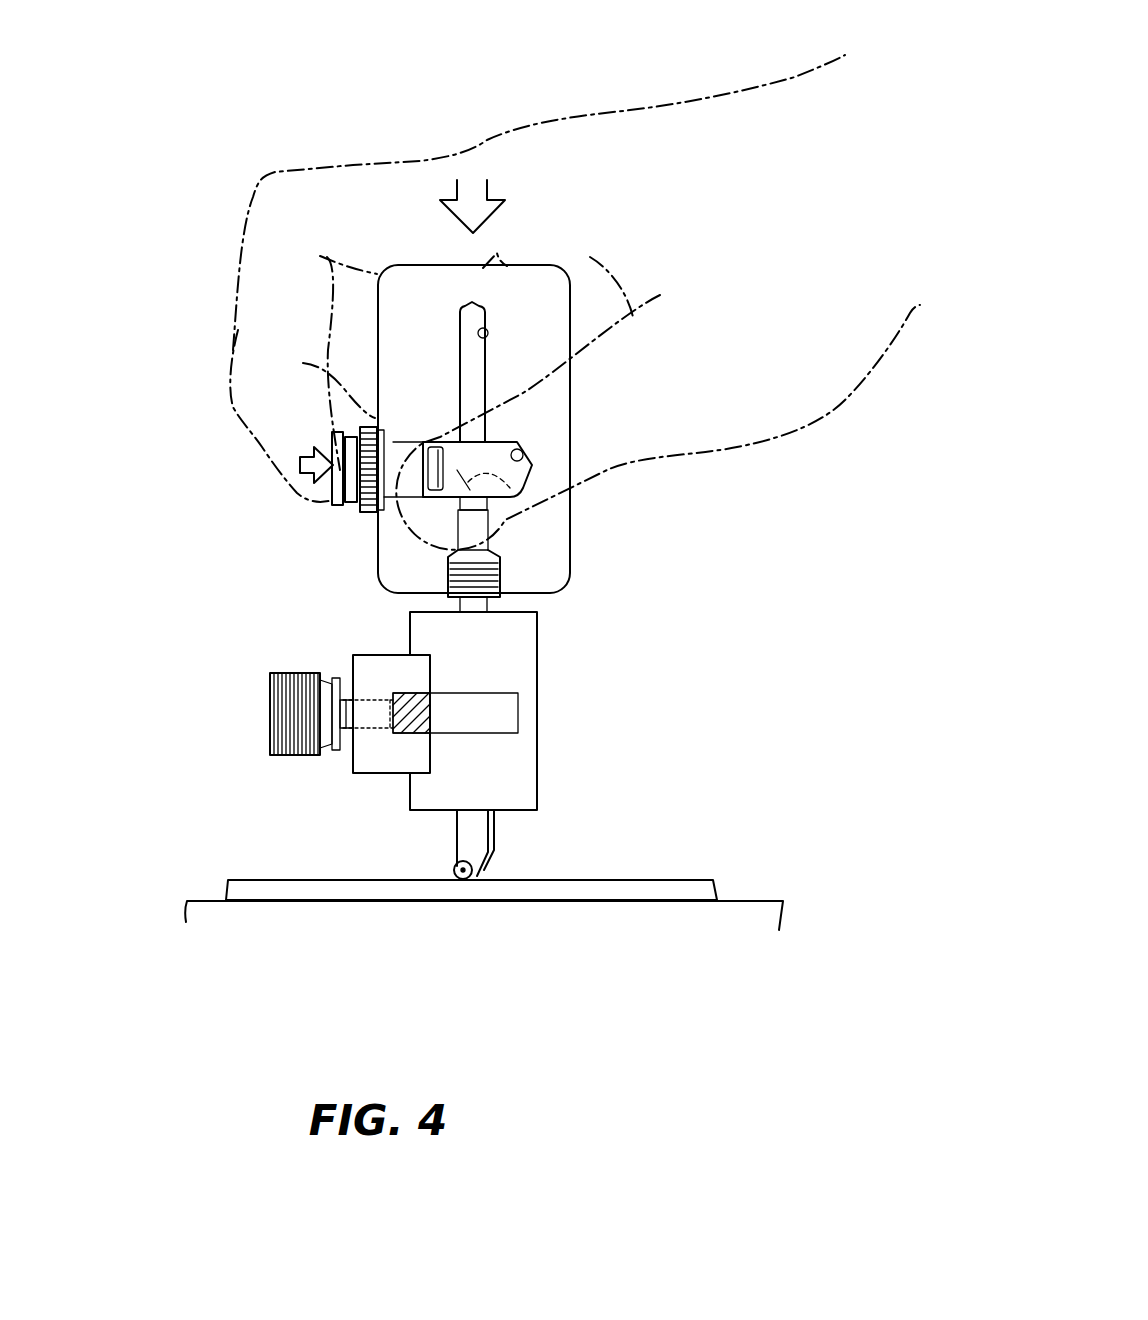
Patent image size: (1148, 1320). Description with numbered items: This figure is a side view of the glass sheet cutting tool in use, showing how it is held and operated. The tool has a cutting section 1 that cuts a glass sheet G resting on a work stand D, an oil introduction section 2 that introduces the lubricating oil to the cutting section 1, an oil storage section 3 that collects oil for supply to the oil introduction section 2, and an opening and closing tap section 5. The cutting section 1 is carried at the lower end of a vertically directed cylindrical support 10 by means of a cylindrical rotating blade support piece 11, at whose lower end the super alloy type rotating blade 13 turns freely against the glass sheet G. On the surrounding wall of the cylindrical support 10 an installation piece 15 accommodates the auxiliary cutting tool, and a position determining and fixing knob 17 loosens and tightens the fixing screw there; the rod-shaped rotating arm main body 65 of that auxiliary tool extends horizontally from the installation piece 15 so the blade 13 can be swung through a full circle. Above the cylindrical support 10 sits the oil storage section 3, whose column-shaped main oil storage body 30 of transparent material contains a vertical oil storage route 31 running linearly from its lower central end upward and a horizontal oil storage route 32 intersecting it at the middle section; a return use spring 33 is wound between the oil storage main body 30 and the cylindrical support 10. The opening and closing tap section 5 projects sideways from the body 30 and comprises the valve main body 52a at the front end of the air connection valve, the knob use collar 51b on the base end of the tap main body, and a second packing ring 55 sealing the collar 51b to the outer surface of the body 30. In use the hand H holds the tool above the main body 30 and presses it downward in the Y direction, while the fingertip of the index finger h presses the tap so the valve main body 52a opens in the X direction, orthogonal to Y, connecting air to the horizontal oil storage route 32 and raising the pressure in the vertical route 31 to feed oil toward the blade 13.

The hand H is at (612, 112).
The index finger h is at (262, 462).
The Y direction Y is at (497, 186).
The X direction X is at (308, 457).
The main oil storage body 30 is at (553, 518).
The oil storage section 3 is at (590, 380).
The vertical oil storage route 31 is at (483, 327).
The horizontal oil storage route 32 is at (523, 452).
The oil introduction section 2 is at (492, 545).
The return use spring 33 is at (490, 600).
The cylindrical support 10 is at (517, 635).
The cutting section 1 is at (562, 728).
The installation piece 15 is at (357, 762).
The rotating arm main body 65 is at (407, 733).
The position determining and fixing knob 17 is at (268, 715).
The rotating blade support piece 11 is at (457, 847).
The rotating blade 13 is at (463, 880).
The glass sheet G is at (613, 878).
The work stand D is at (767, 890).
The opening and closing tap section 5 is at (268, 539).
The valve main body 52a is at (332, 505).
The second packing ring 55 is at (350, 507).
The knob use collar 51b is at (370, 512).